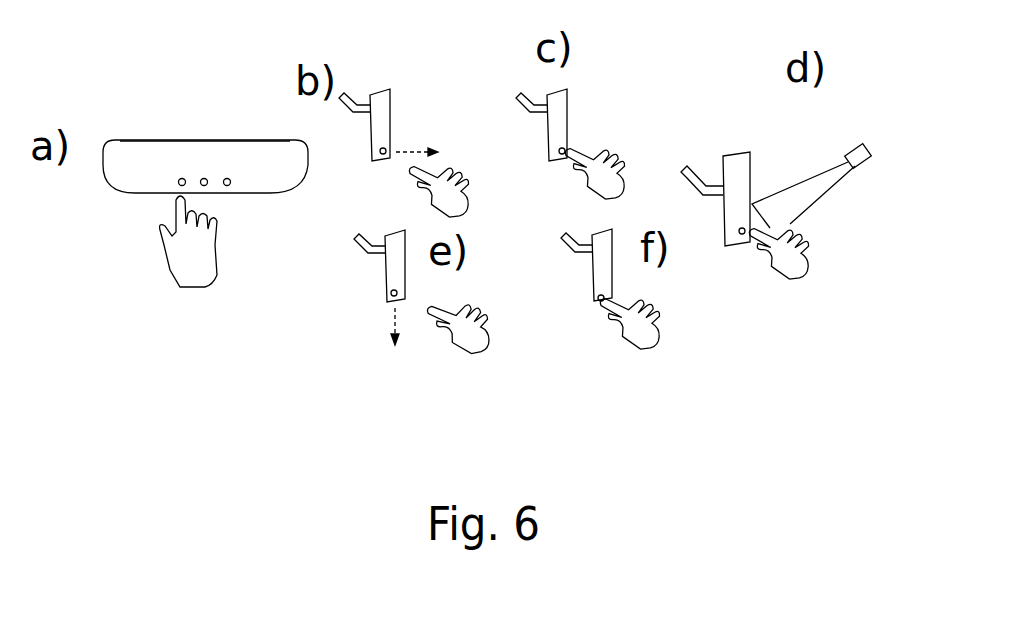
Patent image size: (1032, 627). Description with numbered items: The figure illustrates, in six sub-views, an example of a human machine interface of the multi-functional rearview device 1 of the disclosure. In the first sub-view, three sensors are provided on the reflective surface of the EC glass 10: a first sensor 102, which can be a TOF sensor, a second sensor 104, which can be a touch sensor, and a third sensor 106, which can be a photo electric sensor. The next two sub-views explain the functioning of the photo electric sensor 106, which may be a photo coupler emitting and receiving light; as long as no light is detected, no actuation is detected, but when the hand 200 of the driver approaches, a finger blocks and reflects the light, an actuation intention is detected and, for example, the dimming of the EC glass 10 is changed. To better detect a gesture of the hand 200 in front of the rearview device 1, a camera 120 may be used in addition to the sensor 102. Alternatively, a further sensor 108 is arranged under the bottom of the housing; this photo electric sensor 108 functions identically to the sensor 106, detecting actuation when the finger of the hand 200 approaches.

The multi-functional rearview device 1 is at (112, 123).
The EC glass 10 is at (197, 153).
The first sensor 102 is at (208, 187).
The second sensor 104 is at (231, 185).
The third sensor 106 is at (178, 186).
The further sensor 108 is at (395, 305).
The camera 120 is at (862, 142).
The hand 200 is at (197, 287).